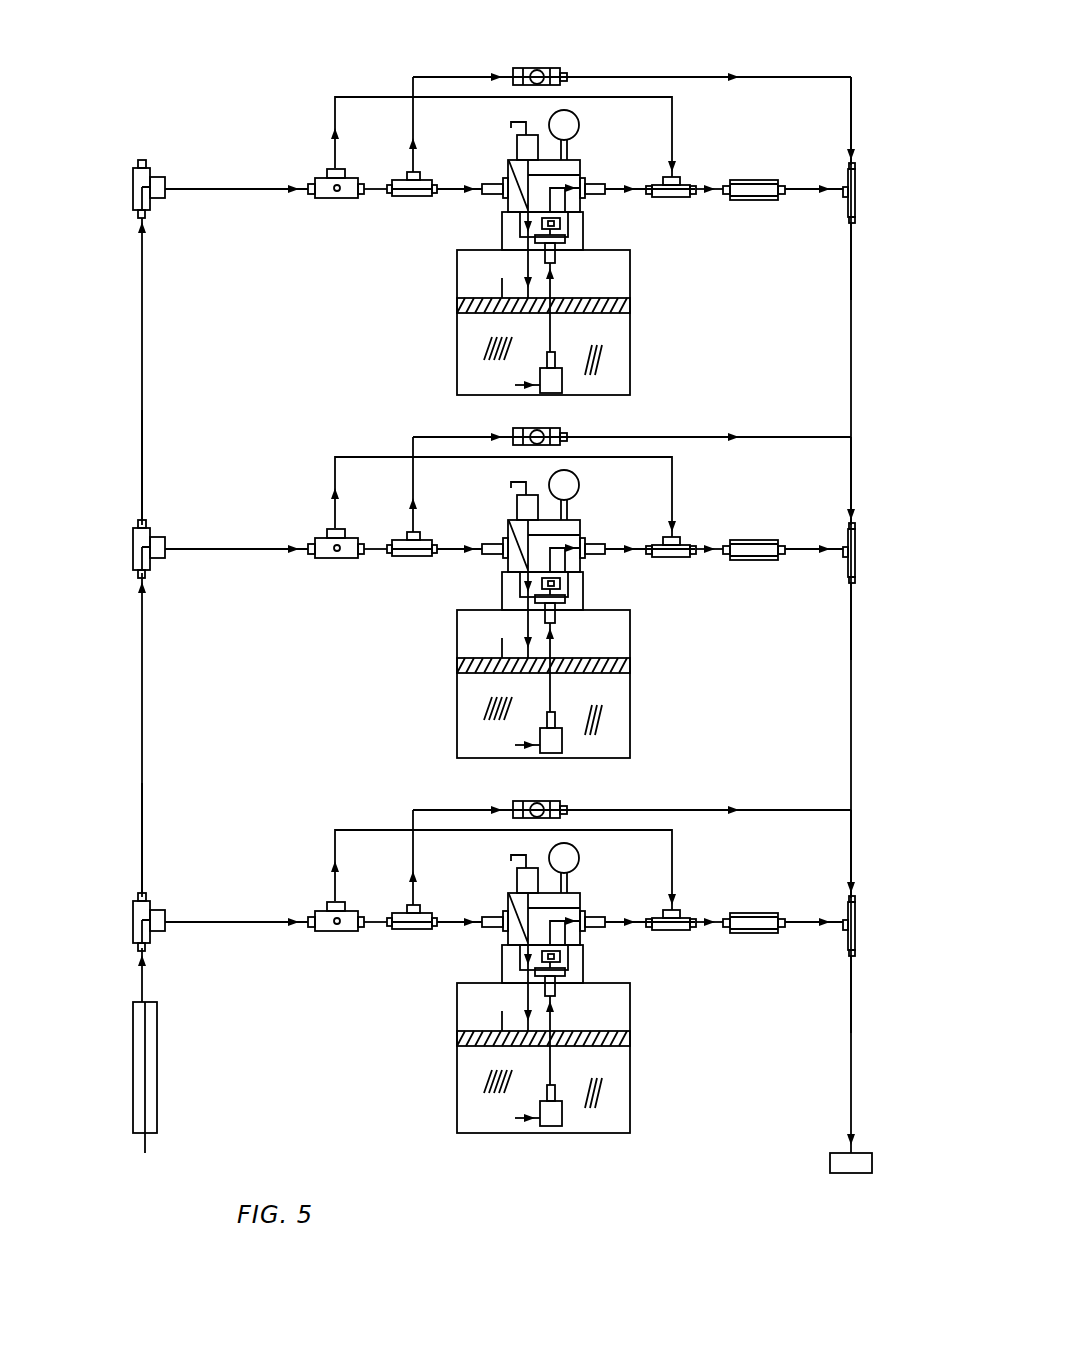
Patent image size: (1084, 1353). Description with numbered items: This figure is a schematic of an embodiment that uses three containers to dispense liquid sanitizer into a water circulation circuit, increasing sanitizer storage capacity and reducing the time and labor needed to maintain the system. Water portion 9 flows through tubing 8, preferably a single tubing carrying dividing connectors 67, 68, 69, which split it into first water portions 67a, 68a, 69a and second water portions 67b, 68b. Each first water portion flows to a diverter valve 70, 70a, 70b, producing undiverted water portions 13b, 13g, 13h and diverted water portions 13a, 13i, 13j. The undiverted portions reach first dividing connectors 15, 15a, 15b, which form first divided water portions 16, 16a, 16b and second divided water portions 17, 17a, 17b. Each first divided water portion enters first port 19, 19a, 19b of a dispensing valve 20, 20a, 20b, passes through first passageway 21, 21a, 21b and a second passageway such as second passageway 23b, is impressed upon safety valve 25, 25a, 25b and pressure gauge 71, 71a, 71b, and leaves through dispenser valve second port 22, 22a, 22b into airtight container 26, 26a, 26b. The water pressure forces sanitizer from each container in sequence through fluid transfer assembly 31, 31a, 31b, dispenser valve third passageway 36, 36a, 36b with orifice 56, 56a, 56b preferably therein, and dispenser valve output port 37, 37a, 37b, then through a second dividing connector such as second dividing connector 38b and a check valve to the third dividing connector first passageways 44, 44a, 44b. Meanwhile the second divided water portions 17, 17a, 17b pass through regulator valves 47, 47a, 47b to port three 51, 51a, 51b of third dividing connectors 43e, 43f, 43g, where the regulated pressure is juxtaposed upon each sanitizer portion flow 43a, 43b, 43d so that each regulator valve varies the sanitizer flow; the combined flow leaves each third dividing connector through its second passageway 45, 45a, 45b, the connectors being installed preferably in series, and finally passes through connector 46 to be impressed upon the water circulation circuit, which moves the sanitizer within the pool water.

The tubing 8 is at (133, 1083).
The water portion 9 is at (142, 978).
The bypass conduit 13a is at (480, 822).
The undiverted water portion 13b is at (353, 963).
The undiverted water portion 13g is at (351, 585).
The undiverted water portion 13h is at (377, 192).
The bypass conduit 13i is at (485, 461).
The diverted water portion 13j is at (365, 93).
The first dividing connector 15 is at (377, 1003).
The first dividing connector 15a is at (373, 619).
The first dividing connector 15b is at (412, 197).
The first divided water portion 16 is at (458, 941).
The first divided water portion 16a is at (448, 573).
The first divided water portion 16b is at (438, 191).
The second divided water portion 17 is at (433, 838).
The second divided water portion 17a is at (436, 465).
The second divided water portion 17b is at (413, 128).
The first port 19 is at (496, 868).
The first port 19a is at (489, 500).
The first port 19b is at (523, 163).
The dispensing valve 20 is at (590, 873).
The dispensing valve 20a is at (598, 504).
The dispensing valve 20b is at (565, 172).
The first passageway 21 is at (490, 959).
The first passageway 21a is at (482, 587).
The first passageway 21b is at (530, 203).
The dispenser valve second port 22 is at (494, 1023).
The dispenser valve second port 22a is at (484, 647).
The dispenser valve second port 22b is at (528, 233).
The second passageway 23b is at (464, 534).
The safety valve 25 is at (495, 819).
The safety valve 25a is at (500, 447).
The safety valve 25b is at (515, 135).
The container 26 is at (590, 1058).
The container 26a is at (600, 684).
The container 26b is at (630, 272).
The fluid transfer assembly 31 is at (577, 1053).
The fluid transfer assembly 31a is at (586, 683).
The fluid transfer assembly 31b is at (550, 333).
The dispenser valve third passageway 36 is at (611, 901).
The dispenser valve third passageway 36a is at (613, 533).
The dispenser valve third passageway 36b is at (570, 175).
The dispenser valve output port 37 is at (601, 942).
The dispenser valve output port 37a is at (605, 570).
The dispenser valve output port 37b is at (580, 205).
The second dividing connector 38b is at (687, 522).
The conduit 43a is at (796, 521).
The sanitizer portion flow 43b is at (799, 893).
The sanitizer portion flow 43d is at (803, 188).
The third dividing connector 43e is at (897, 922).
The third dividing connector 43f is at (893, 553).
The third dividing connector 43g is at (855, 198).
The third dividing connector first passageway 44 is at (826, 857).
The third dividing connector first passageway 44a is at (815, 489).
The third dividing connector first passageway 44b is at (838, 182).
The drain line 45 is at (893, 990).
The drain line 45a is at (892, 617).
The drain line 45b is at (853, 215).
The connector 46 is at (873, 1160).
The regulator valve 47 is at (632, 796).
The regulator valve 47a is at (632, 424).
The regulator valve 47b is at (553, 63).
The port three 51 is at (889, 899).
The port three 51a is at (881, 520).
The port three 51b is at (853, 172).
The orifice 56 is at (621, 1018).
The orifice 56a is at (627, 645).
The orifice 56b is at (555, 223).
The dividing connector 67 is at (117, 920).
The first water portion 67a is at (236, 875).
The second water portion 67b is at (108, 836).
The dividing connector 68 is at (117, 539).
The first water portion 68a is at (236, 508).
The second water portion 68b is at (107, 465).
The dividing connector 69 is at (133, 182).
The first water portion 69a is at (210, 185).
The diverter valve 70 is at (307, 977).
The diverter valve 70a is at (304, 601).
The diverter valve 70b is at (325, 198).
The pressure gauge 71 is at (623, 830).
The pressure gauge 71a is at (636, 460).
The pressure gauge 71b is at (580, 122).